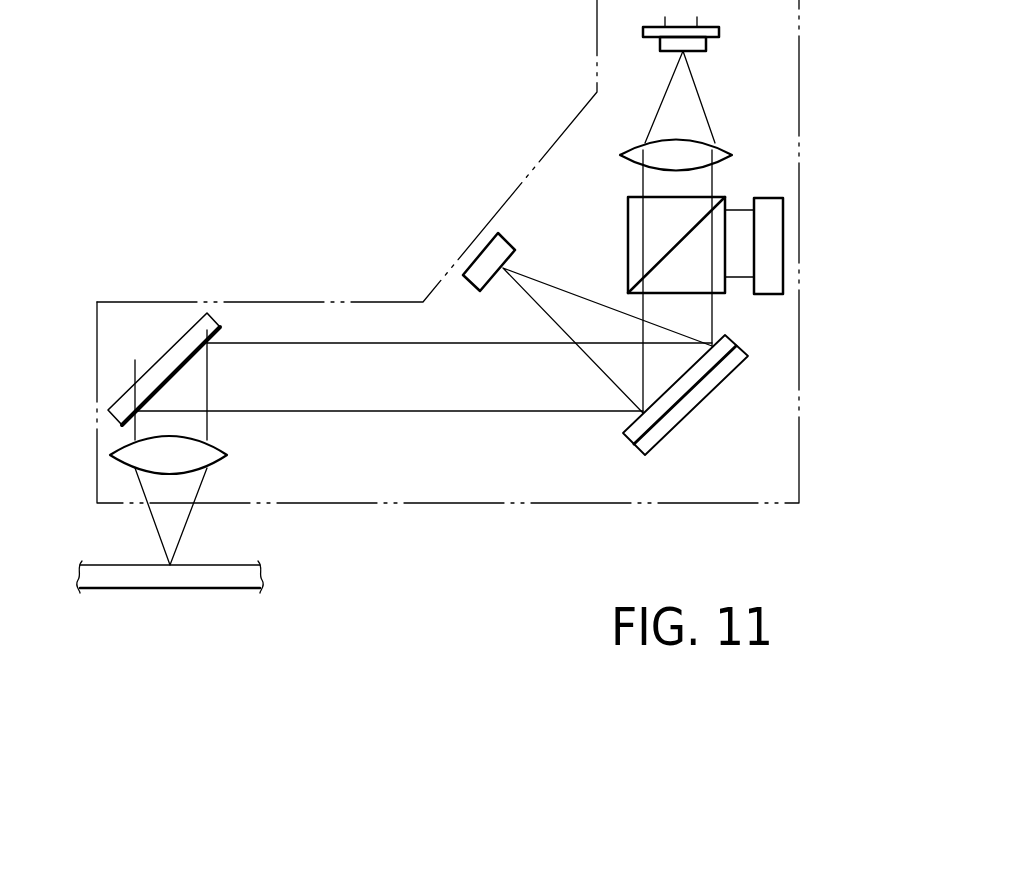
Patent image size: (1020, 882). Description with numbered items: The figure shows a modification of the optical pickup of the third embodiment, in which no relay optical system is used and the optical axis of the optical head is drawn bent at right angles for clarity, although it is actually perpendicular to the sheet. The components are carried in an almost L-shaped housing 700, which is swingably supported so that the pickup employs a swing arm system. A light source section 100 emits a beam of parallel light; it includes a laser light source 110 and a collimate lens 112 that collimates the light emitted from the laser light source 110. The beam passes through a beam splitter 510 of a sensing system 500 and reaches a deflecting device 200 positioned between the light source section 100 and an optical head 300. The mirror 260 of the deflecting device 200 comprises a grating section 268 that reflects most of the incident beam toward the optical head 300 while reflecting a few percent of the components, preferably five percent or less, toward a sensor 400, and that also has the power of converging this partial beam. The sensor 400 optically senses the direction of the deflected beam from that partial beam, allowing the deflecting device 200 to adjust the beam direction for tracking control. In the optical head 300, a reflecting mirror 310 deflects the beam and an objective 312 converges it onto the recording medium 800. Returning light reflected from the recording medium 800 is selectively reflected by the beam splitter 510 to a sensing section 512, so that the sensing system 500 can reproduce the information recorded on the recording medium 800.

The light source section 100 is at (649, 94).
The light source 110 is at (706, 49).
The collimate lens 112 is at (695, 136).
The deflecting device 200 is at (760, 405).
The mirror 260 is at (662, 442).
The grating section 268 is at (670, 378).
The optical head 300 is at (162, 376).
The reflecting mirror 310 is at (150, 375).
The objective 312 is at (212, 452).
The sensor 400 is at (470, 286).
The sensing system 500 is at (739, 224).
The beam splitter 510 is at (628, 230).
The sensing section 512 is at (770, 296).
The housing 700 is at (448, 505).
The recording medium 800 is at (220, 590).